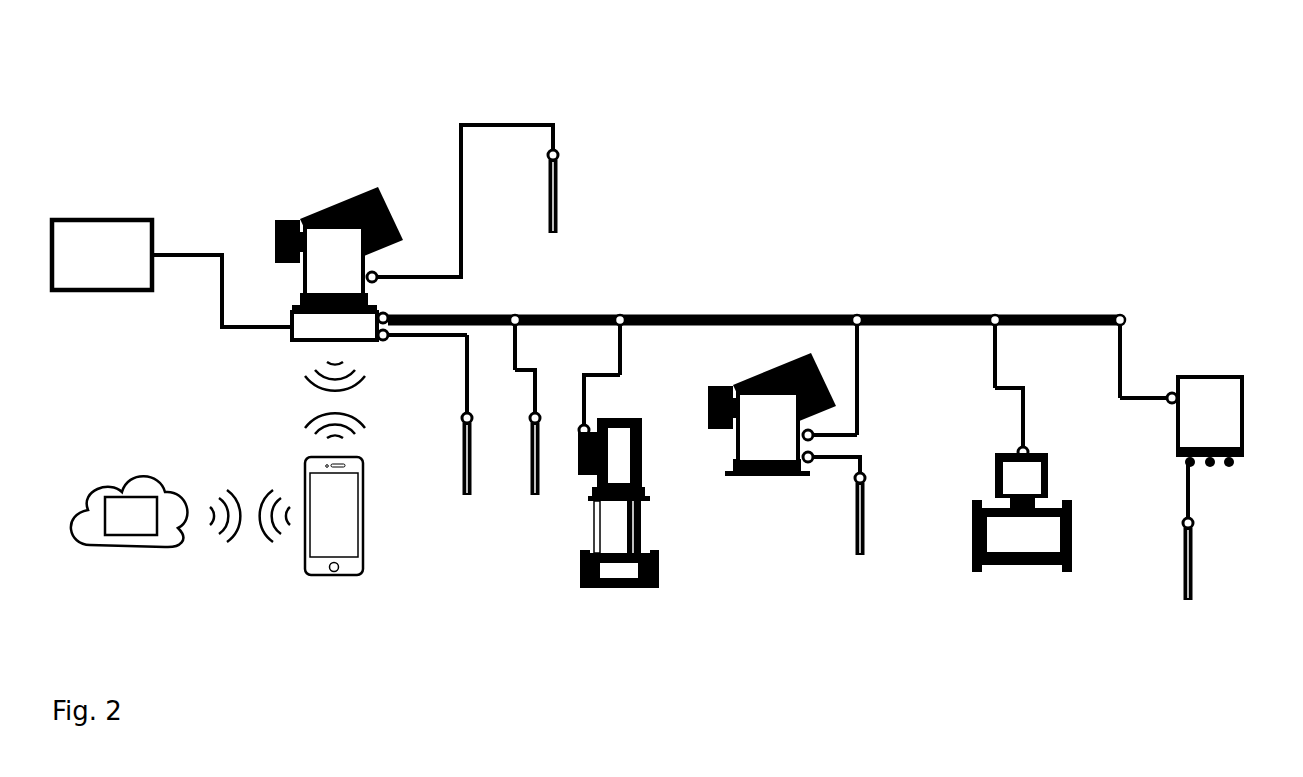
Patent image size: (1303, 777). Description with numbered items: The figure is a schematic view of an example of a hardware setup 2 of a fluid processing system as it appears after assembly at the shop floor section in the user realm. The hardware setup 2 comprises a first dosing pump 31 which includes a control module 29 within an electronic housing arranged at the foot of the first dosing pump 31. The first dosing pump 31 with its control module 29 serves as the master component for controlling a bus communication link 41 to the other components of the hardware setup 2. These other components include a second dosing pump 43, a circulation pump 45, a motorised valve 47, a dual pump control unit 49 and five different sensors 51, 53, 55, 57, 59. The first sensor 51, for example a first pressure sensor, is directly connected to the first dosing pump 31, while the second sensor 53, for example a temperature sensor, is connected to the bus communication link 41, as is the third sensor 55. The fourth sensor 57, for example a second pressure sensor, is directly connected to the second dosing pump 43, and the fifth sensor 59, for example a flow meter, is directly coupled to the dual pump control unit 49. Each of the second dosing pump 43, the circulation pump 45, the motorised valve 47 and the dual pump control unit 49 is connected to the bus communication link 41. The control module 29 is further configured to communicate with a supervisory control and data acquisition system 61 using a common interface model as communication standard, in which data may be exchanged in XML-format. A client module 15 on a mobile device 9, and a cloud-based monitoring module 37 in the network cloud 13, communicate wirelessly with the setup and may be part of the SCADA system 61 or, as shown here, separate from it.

The hardware setup 2 is at (1140, 68).
The supervisory control and data acquisition (SCADA) system 61 is at (172, 273).
The first dosing pump 31 is at (414, 217).
The control module 29 is at (340, 375).
The bus communication link 41 is at (722, 312).
The first sensor 51 is at (557, 190).
The second sensor 53 is at (472, 470).
The third sensor 55 is at (538, 470).
The circulation pump 45 is at (672, 540).
The second dosing pump 43 is at (784, 414).
The fourth sensor 57 is at (866, 527).
The motorised valve 47 is at (1092, 537).
The dual pump control unit 49 is at (1268, 433).
The fifth sensor 59 is at (1193, 565).
The network cloud 13 is at (129, 463).
The cloud-based monitoring module 37 is at (131, 516).
The mobile device 9 is at (373, 533).
The client module 15 is at (337, 578).